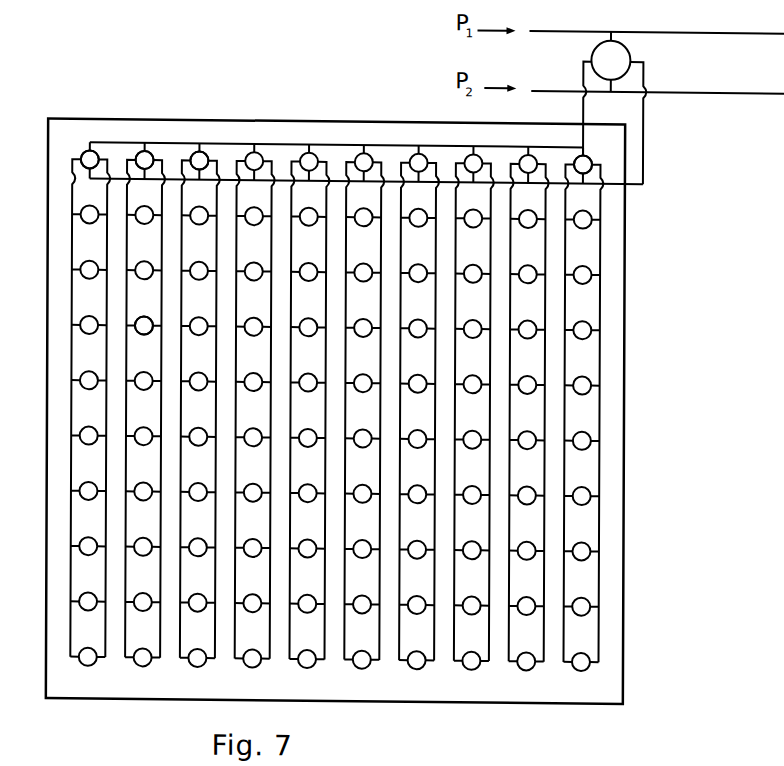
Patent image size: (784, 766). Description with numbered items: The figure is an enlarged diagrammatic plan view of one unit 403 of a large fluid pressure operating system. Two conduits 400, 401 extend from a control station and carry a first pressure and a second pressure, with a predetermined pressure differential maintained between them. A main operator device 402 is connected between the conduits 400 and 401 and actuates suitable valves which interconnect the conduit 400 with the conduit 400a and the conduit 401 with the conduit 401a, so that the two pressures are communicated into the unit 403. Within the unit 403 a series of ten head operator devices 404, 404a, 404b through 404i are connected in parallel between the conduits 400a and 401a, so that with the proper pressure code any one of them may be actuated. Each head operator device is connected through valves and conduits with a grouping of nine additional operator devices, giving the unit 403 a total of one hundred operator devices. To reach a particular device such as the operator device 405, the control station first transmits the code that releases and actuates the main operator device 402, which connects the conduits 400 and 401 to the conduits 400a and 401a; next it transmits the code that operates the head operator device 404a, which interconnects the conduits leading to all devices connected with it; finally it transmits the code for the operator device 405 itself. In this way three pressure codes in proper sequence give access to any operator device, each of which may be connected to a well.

The conduit 400 is at (568, 29).
The conduit 400a is at (643, 120).
The conduit 401 is at (560, 77).
The conduit 401a is at (582, 106).
The main operator device 402 is at (618, 50).
The unit 403 is at (70, 121).
The head operator device 404 is at (113, 134).
The head operator device 404a is at (163, 139).
The head operator device 404b is at (214, 144).
The head operator device 404i is at (591, 158).
The operator device 405 is at (149, 312).